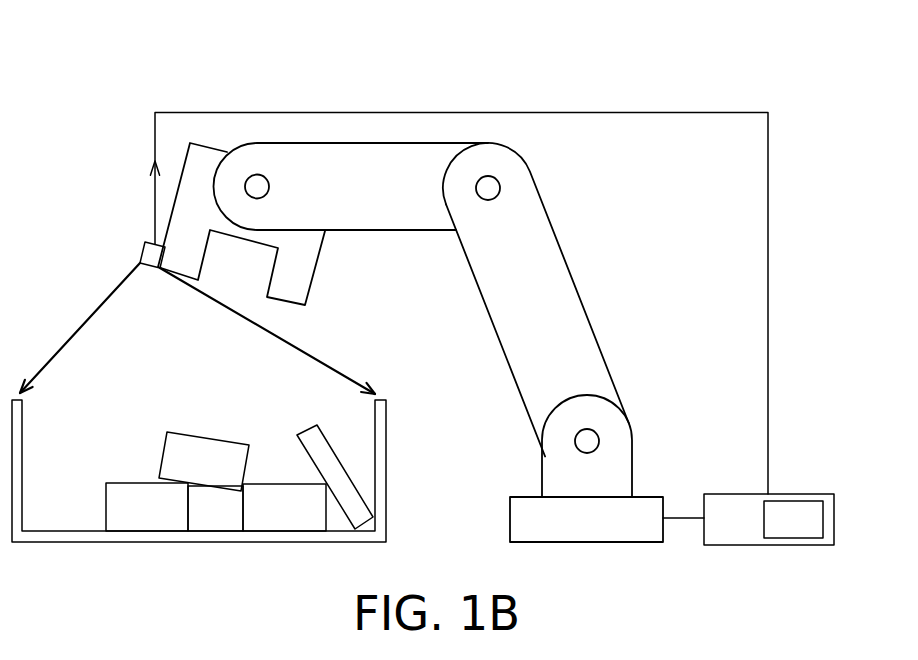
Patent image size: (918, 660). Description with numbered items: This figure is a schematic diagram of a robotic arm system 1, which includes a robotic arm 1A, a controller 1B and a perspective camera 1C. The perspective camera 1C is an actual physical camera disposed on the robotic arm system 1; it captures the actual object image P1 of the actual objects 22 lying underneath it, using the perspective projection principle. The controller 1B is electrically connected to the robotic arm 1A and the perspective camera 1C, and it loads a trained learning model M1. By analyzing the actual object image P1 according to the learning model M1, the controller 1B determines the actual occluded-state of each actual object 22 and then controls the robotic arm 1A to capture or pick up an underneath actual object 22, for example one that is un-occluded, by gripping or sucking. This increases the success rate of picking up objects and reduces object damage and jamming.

The robotic arm system 1 is at (462, 82).
The robotic arm 1A is at (580, 297).
The controller 1B is at (753, 532).
The perspective camera 1C is at (138, 255).
The learning model M1 is at (812, 532).
The actual object image P1 is at (139, 170).
The actual object 22 is at (207, 438).